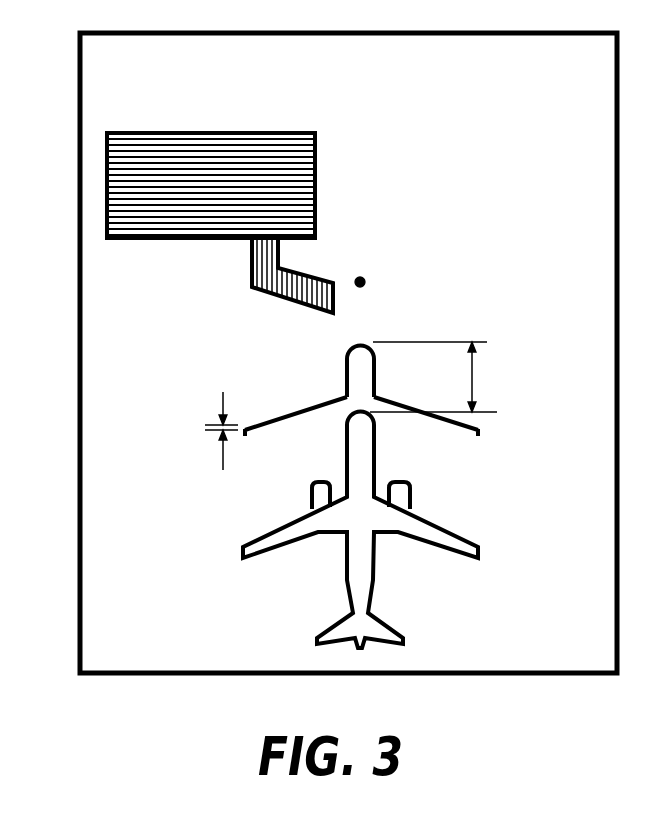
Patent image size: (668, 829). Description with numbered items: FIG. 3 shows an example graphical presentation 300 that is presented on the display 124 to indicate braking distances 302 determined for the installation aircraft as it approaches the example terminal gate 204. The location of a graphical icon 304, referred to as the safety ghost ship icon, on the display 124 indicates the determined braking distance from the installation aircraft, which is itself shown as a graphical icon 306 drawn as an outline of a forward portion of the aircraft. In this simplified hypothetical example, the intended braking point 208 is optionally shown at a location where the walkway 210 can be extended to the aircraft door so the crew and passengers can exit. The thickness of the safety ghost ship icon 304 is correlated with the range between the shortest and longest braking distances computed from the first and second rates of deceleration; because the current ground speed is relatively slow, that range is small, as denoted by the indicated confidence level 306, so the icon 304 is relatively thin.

The display 124 is at (589, 646).
The terminal gate 204 is at (315, 173).
The intended braking point 208 is at (360, 282).
The walkway 210 is at (251, 253).
The graphical presentation 300 is at (499, 692).
The braking distances 302 is at (399, 389).
The graphical icon 304 is at (315, 406).
The graphical icon 306 is at (204, 409).